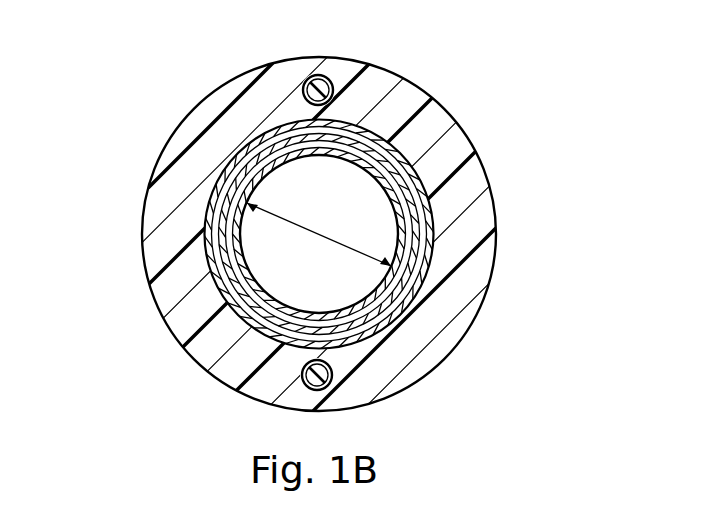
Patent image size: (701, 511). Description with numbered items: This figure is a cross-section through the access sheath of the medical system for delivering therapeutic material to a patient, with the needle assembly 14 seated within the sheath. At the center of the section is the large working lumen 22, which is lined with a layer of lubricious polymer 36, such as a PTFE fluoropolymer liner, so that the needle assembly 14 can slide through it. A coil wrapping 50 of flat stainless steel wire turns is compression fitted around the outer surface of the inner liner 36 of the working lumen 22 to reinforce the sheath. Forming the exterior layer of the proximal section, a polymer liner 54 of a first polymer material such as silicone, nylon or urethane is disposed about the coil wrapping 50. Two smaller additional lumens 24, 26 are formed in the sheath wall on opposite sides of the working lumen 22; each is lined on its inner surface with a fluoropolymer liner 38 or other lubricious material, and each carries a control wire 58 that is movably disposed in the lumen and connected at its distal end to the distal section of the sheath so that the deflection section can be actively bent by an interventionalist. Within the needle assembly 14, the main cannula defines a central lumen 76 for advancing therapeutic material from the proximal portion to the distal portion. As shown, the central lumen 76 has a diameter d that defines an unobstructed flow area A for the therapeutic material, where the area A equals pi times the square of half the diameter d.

The needle assembly 14 is at (270, 268).
The working lumen 22 is at (428, 243).
The additional lumen 24 is at (329, 79).
The additional lumen 26 is at (328, 388).
The lubricious polymer layer 36 is at (418, 292).
The fluoropolymer liner 38 is at (333, 99).
The coil wrapping 50 is at (410, 172).
The polymer liner 54 is at (458, 202).
The control wire 58 is at (304, 80).
The central lumen 76 is at (233, 265).
The unobstructed flow area A is at (272, 237).
The diameter d is at (307, 223).